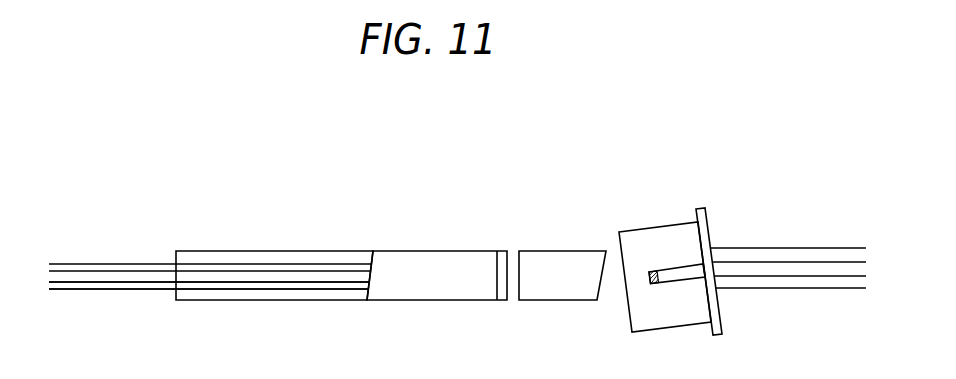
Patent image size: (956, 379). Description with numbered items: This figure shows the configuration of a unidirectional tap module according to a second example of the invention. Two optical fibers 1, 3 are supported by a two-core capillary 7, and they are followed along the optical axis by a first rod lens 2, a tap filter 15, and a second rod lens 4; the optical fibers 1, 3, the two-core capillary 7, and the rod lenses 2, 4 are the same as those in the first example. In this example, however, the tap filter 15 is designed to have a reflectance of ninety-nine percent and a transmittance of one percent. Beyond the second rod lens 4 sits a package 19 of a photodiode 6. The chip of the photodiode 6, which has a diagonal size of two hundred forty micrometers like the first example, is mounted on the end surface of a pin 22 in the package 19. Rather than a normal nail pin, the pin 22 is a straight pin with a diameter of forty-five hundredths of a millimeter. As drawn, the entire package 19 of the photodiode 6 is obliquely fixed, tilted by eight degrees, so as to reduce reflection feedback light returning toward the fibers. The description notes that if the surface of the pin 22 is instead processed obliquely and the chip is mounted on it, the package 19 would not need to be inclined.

The optical fiber 1 is at (121, 264).
The optical fiber 3 is at (118, 300).
The two-core capillary 7 is at (265, 257).
The rod lens 2 is at (430, 258).
The tap filter 15 is at (503, 258).
The rod lens 4 is at (557, 258).
The package 19 is at (653, 236).
The pin 22 is at (678, 279).
The photodiode 6 is at (653, 286).